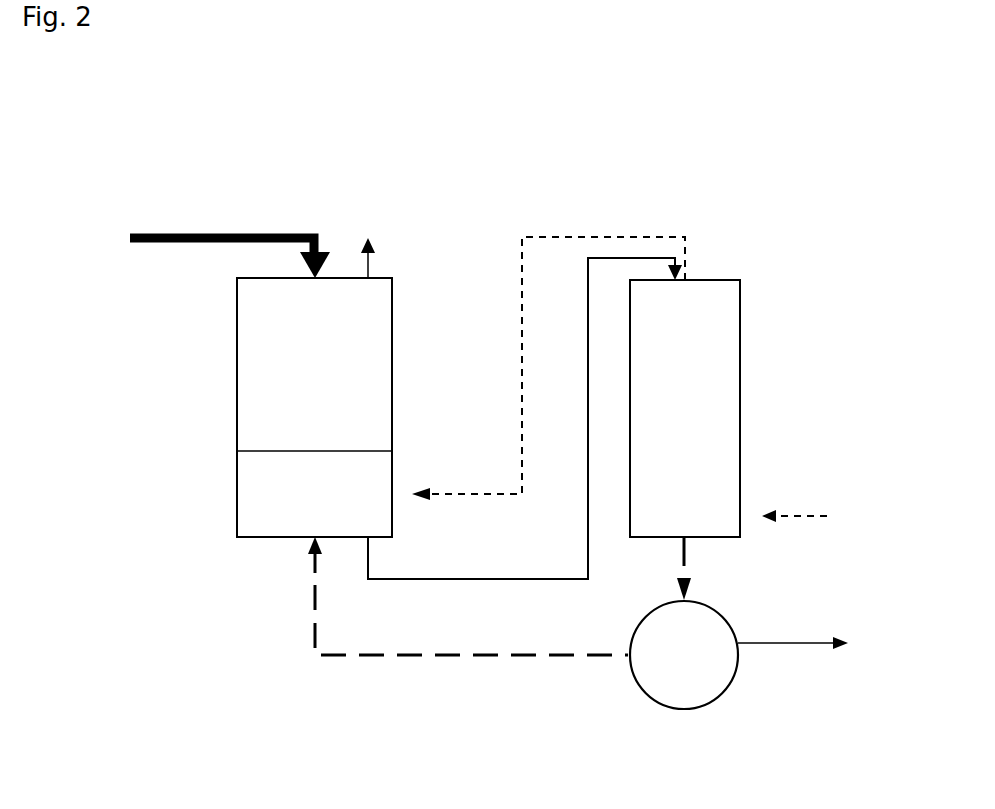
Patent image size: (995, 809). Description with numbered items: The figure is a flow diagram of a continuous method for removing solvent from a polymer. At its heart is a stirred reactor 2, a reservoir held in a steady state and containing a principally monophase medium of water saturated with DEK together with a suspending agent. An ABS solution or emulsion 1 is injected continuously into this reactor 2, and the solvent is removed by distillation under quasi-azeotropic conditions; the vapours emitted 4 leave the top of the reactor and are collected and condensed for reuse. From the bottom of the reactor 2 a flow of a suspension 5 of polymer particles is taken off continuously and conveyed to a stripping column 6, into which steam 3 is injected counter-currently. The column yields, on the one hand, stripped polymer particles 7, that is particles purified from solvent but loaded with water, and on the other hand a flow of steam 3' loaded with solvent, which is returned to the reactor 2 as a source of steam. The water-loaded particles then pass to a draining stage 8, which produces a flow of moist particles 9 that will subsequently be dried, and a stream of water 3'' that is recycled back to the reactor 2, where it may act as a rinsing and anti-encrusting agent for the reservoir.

The ABS solution or emulsion 1 is at (197, 249).
The stirred reactor 2 is at (314, 407).
The steam 3 is at (807, 518).
The flow of steam loaded with solvent 3' is at (548, 368).
The stream of water 3'' is at (430, 596).
The vapours emitted 4 is at (369, 225).
The flow of suspension of polymer particles 5 is at (525, 437).
The stripping column 6 is at (685, 408).
The stripped polymer particles 7 is at (712, 568).
The draining of polymer particles 8 is at (684, 655).
The flow of moist particles 9 is at (811, 636).